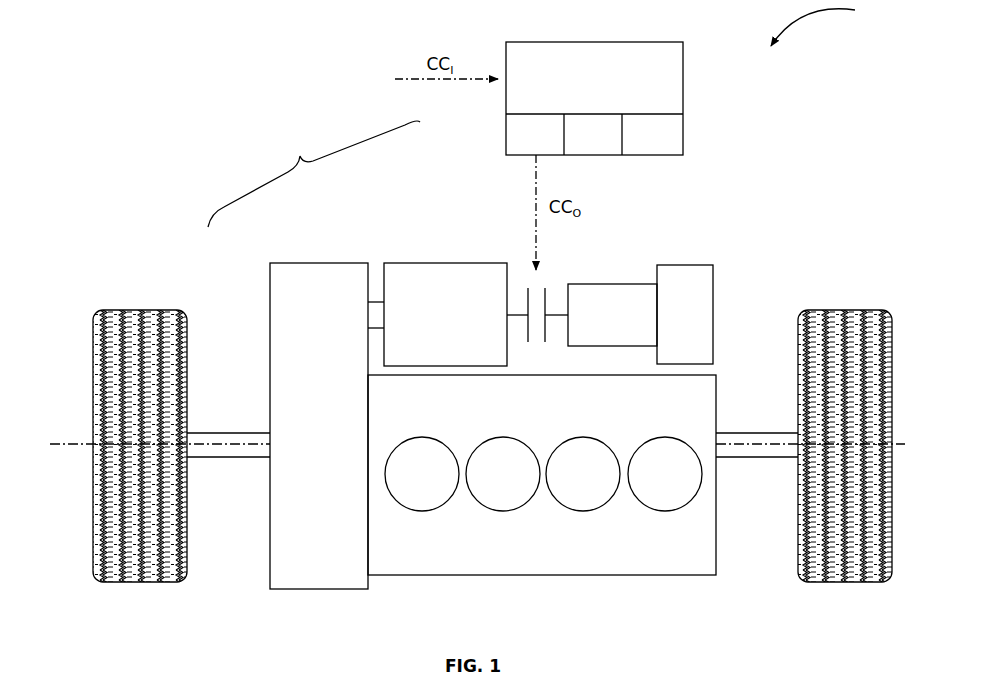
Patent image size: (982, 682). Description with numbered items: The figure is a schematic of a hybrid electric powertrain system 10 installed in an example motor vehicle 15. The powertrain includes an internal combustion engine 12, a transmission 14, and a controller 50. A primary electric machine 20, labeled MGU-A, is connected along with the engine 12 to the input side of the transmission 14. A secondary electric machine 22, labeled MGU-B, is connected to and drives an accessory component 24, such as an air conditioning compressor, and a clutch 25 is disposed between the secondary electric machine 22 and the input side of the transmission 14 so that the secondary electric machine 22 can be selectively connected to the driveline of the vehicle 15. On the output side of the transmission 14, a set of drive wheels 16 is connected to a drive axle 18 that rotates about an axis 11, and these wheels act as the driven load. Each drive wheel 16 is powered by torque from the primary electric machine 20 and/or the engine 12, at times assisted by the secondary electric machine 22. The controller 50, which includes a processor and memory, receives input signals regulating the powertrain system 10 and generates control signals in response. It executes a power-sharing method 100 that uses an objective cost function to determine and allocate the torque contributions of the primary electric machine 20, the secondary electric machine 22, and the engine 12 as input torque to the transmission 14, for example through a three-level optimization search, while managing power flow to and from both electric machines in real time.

The hybrid electric powertrain system 10 is at (314, 174).
The axis 11 is at (83, 435).
The internal combustion engine 12 is at (608, 575).
The transmission 14 is at (322, 262).
The motor vehicle 15 is at (825, 24).
The drive wheels 16 is at (158, 310).
The drive axle 18 is at (258, 432).
The primary electric machine 20 is at (445, 262).
The secondary electric machine 22 is at (614, 268).
The accessory component 24 is at (687, 265).
The clutch 25 is at (542, 352).
The controller 50 is at (683, 83).
The method 100 is at (652, 142).